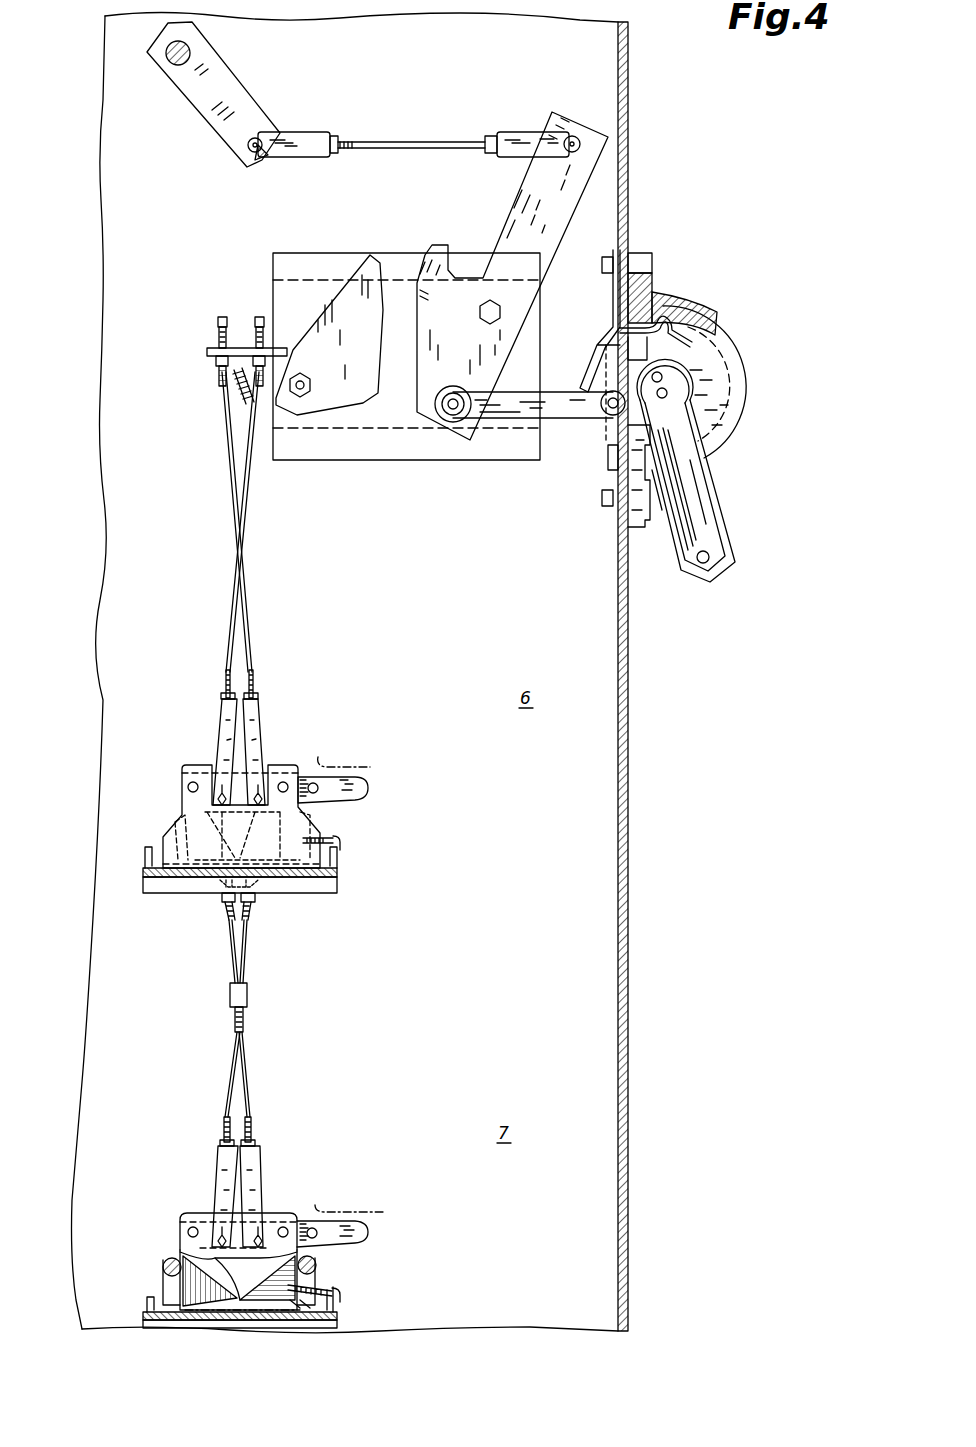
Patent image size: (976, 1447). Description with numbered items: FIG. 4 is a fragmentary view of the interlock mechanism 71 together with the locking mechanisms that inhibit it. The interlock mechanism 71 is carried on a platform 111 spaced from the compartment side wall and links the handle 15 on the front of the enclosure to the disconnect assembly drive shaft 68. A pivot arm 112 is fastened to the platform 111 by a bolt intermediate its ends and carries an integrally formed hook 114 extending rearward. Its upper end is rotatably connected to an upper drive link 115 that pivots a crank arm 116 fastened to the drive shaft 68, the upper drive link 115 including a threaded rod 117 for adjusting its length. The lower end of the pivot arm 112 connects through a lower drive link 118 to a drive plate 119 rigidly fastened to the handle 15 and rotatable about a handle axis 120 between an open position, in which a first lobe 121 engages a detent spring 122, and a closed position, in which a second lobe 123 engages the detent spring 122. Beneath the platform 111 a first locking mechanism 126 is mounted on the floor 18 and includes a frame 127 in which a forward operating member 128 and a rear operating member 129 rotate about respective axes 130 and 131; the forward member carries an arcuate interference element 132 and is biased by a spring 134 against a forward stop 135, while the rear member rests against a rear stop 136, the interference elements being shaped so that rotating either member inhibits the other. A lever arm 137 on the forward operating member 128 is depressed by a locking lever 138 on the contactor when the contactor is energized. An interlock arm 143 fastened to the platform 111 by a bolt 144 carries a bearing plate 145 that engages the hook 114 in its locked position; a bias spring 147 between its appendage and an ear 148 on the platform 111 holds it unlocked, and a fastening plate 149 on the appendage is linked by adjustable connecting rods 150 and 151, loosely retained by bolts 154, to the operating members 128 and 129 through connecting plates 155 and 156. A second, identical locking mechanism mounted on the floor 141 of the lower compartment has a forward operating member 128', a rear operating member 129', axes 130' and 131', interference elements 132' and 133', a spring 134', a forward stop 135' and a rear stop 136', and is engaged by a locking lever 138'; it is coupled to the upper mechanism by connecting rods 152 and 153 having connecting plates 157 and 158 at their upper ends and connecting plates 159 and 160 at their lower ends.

The handle 15 is at (733, 527).
The floor 18 is at (340, 884).
The drive shaft 68 is at (192, 52).
The interlock mechanism 71 is at (452, 118).
The platform 111 is at (436, 339).
The pivot arm 112 is at (558, 226).
The hook 114 is at (438, 262).
The upper drive link 115 is at (405, 137).
The crank arm 116 is at (210, 115).
The threaded rod 117 is at (382, 138).
The lower drive link 118 is at (517, 412).
The drive plate 119 is at (613, 430).
The handle axis 120 is at (668, 378).
The first lobe 121 is at (683, 338).
The detent spring 122 is at (653, 297).
The second lobe 123 is at (740, 403).
The first locking mechanism 126 is at (167, 779).
The frame 127 is at (163, 837).
The forward operating member 128 is at (294, 749).
The rear operating member 129 is at (232, 803).
The axis 130 is at (309, 759).
The axis 131 is at (196, 760).
The arcuate interference element 132 is at (270, 904).
The spring 134 is at (362, 845).
The forward stop 135 is at (278, 868).
The rear stop 136 is at (160, 823).
The lever arm 137 is at (365, 776).
The locking lever 138 is at (366, 739).
The floor 141 is at (130, 1248).
The interlock arm 143 is at (370, 325).
The bolt 144 is at (320, 380).
The bearing plate 145 is at (372, 254).
The bias spring 147 is at (238, 380).
The ear 148 is at (262, 440).
The fastening plate 149 is at (207, 351).
The adjustable connecting rod 150 is at (232, 482).
The adjustable connecting rod 151 is at (252, 510).
The adjustable connecting rod 152 is at (250, 950).
The adjustable connecting rod 153 is at (230, 965).
The bolts 154 is at (240, 330).
The connecting plate 155 is at (260, 714).
The connecting plate 156 is at (220, 710).
The connecting plate 157 is at (272, 900).
The connecting plate 158 is at (218, 890).
The connecting plate 159 is at (260, 1153).
The connecting plate 160 is at (218, 1153).
The rear operating member 129' is at (208, 1232).
The axis 130' is at (301, 1197).
The axis 131' is at (178, 1200).
The arcuate interference element 132' is at (330, 1307).
The arcuate interference element 133' is at (207, 1280).
The spring 134' is at (350, 1291).
The forward stop 135' is at (343, 1266).
The rear stop 136' is at (139, 1265).
The locking lever 138' is at (366, 1181).
The forward operating member 128' is at (346, 1240).